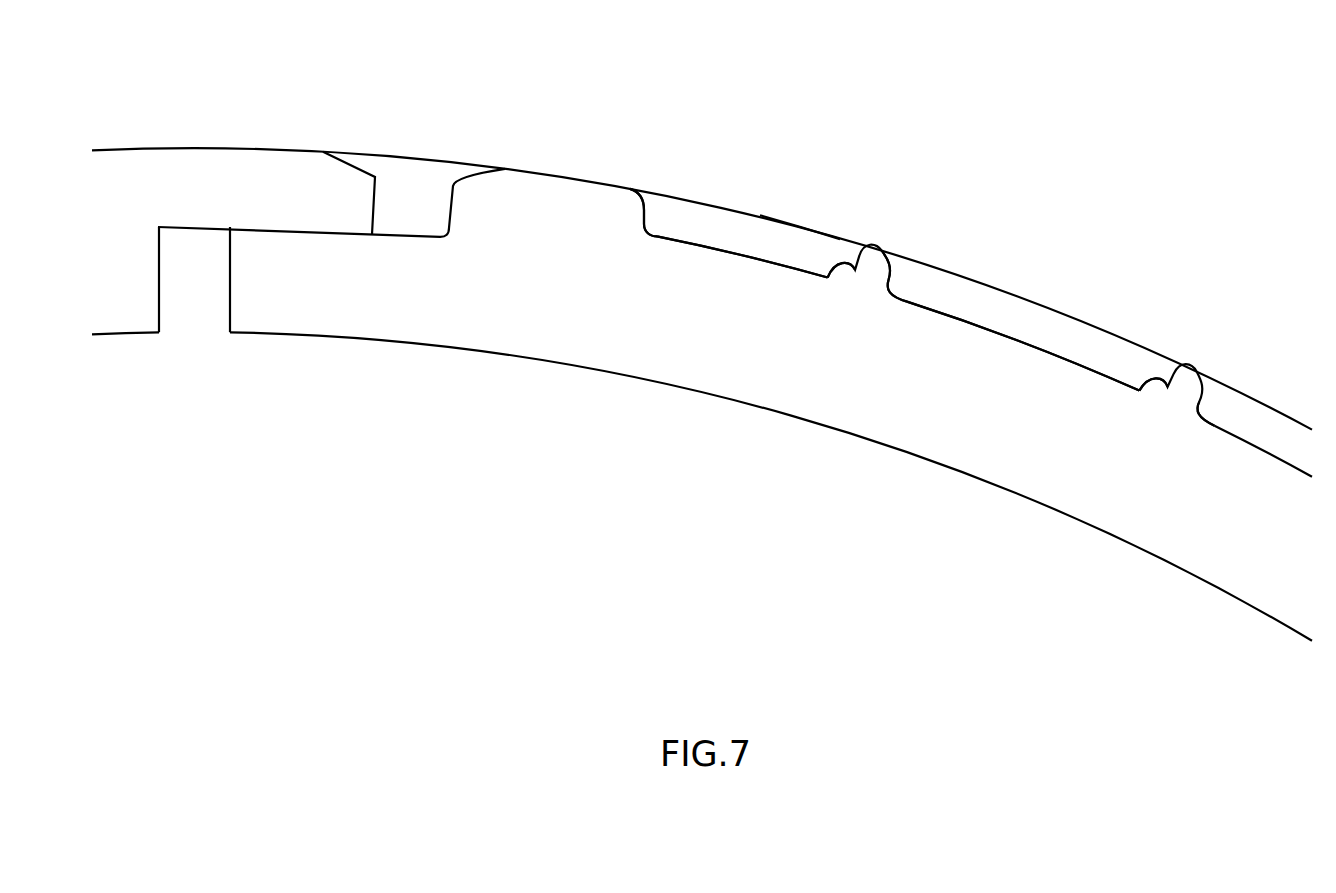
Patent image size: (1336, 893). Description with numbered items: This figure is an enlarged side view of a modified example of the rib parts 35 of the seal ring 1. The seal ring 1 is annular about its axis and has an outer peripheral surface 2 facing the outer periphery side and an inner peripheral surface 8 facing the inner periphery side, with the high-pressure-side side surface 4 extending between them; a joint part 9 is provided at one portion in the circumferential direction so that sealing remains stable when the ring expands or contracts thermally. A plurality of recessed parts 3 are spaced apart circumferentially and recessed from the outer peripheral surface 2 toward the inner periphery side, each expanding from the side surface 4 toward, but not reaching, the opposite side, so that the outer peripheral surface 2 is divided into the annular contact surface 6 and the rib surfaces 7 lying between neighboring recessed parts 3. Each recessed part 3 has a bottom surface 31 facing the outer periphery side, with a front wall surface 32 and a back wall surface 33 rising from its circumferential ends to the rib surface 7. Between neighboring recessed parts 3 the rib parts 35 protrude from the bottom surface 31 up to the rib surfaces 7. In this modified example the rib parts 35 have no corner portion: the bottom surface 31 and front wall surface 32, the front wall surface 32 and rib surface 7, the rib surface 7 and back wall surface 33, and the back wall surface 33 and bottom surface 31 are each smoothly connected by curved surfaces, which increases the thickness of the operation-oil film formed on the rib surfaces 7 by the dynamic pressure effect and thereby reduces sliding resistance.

The seal ring 1 is at (907, 120).
The outer peripheral surface 2 is at (1115, 332).
The recessed parts 3 is at (742, 232).
The high-pressure-side side surface 4 is at (285, 283).
The contact surface 6 is at (800, 227).
The rib surfaces 7 is at (885, 242).
The inner peripheral surface 8 is at (907, 453).
The joint part 9 is at (267, 188).
The bottom surface 31 is at (717, 246).
The front wall surface 32 is at (830, 268).
The back wall surface 33 is at (647, 215).
The rib parts 35 is at (903, 269).